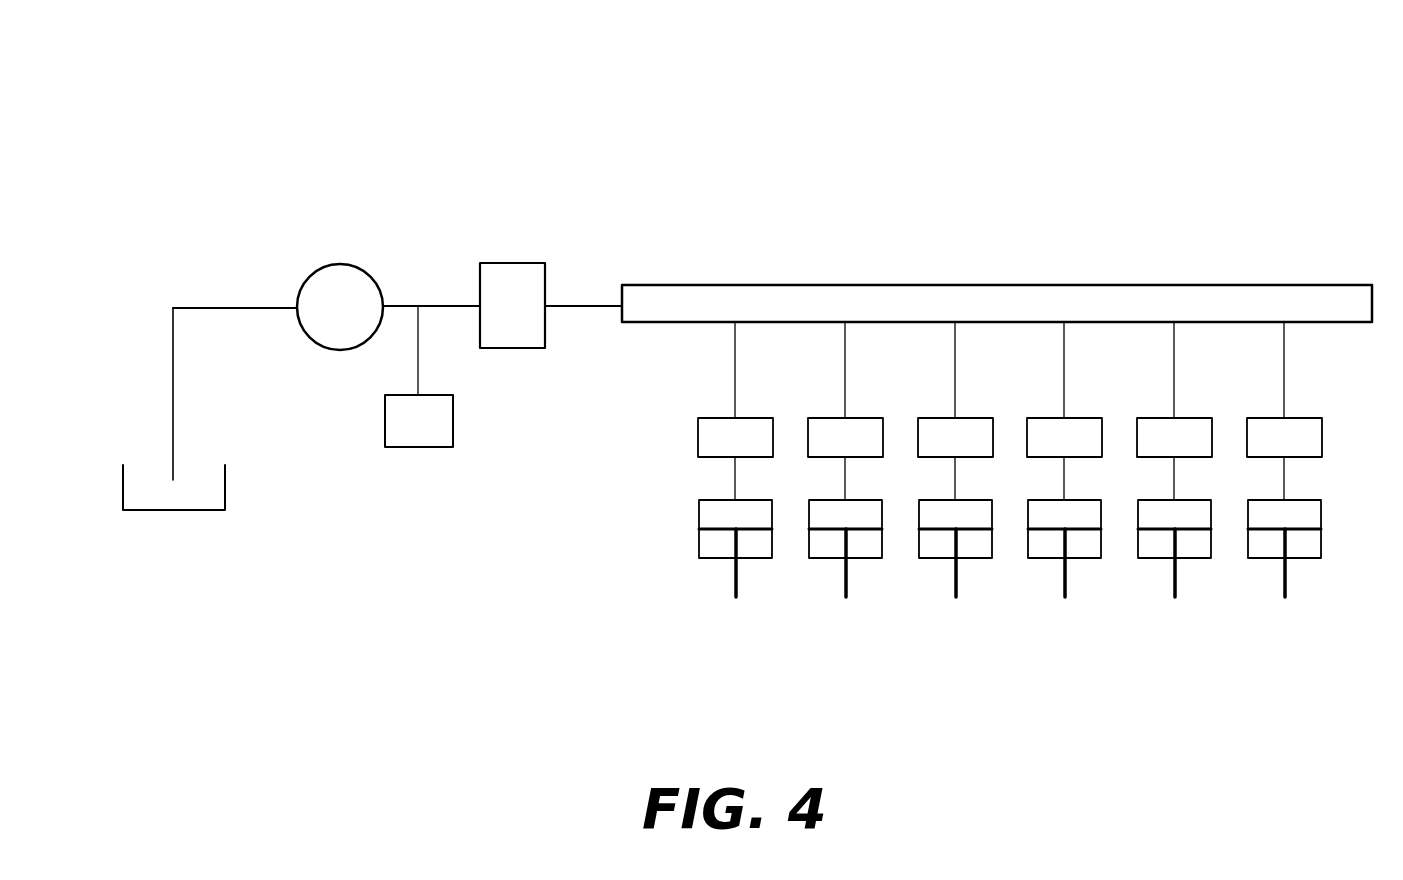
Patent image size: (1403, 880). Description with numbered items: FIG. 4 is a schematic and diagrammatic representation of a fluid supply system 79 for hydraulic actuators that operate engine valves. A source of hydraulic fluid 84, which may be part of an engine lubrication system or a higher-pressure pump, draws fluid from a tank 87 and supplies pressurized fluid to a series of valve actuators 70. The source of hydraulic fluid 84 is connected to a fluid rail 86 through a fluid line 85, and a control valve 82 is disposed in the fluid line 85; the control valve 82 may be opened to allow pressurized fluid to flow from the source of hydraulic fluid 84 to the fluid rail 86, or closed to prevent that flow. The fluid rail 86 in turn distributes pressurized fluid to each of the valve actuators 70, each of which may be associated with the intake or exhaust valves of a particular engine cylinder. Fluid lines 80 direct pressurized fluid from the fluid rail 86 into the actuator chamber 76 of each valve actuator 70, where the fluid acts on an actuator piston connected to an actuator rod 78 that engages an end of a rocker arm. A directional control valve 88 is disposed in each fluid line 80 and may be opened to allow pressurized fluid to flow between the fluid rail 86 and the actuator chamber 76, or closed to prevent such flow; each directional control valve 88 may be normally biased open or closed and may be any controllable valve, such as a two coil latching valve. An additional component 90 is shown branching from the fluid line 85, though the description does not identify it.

The valve actuator 70 is at (650, 531).
The actuator chamber 76 is at (705, 517).
The actuator rod 78 is at (732, 584).
The fluid supply system 79 is at (733, 168).
The fluid line 80 is at (735, 480).
The control valve 82 is at (510, 263).
The source of hydraulic fluid 84 is at (336, 263).
The fluid line 85 is at (446, 305).
The fluid rail 86 is at (953, 284).
The tank 87 is at (175, 512).
The directional control valve 88 is at (709, 431).
The pressure regulator 90 is at (420, 449).